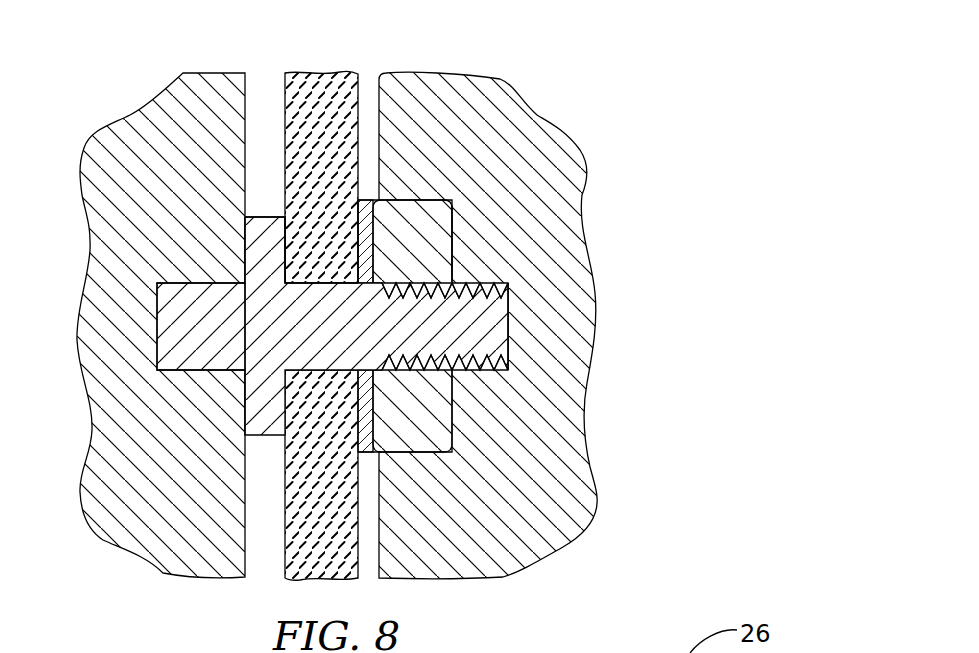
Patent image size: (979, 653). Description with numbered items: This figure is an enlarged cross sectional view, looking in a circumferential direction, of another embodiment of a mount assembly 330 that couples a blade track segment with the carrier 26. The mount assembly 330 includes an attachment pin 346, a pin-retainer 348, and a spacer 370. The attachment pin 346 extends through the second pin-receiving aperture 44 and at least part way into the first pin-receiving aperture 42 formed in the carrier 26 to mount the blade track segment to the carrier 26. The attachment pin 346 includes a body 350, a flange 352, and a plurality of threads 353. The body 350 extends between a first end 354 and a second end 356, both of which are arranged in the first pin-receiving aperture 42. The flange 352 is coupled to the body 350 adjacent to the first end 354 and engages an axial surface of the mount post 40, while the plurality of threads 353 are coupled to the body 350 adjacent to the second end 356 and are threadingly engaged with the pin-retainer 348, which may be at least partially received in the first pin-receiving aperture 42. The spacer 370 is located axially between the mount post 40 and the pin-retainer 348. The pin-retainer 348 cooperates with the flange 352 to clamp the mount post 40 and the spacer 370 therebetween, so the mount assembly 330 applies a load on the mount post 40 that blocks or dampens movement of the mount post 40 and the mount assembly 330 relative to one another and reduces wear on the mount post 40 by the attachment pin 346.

The carrier 26 is at (520, 85).
The mount post 40 is at (341, 74).
The first pin-receiving aperture 42 is at (150, 292).
The second pin-receiving aperture 44 is at (318, 284).
The mount assembly 330 is at (434, 190).
The attachment pin 346 is at (230, 212).
The pin-retainer 348 is at (453, 228).
The body 350 is at (157, 347).
The flange 352 is at (233, 243).
The plurality of threads 353 is at (489, 373).
The first end 354 is at (152, 307).
The second end 356 is at (511, 335).
The spacer 370 is at (365, 193).